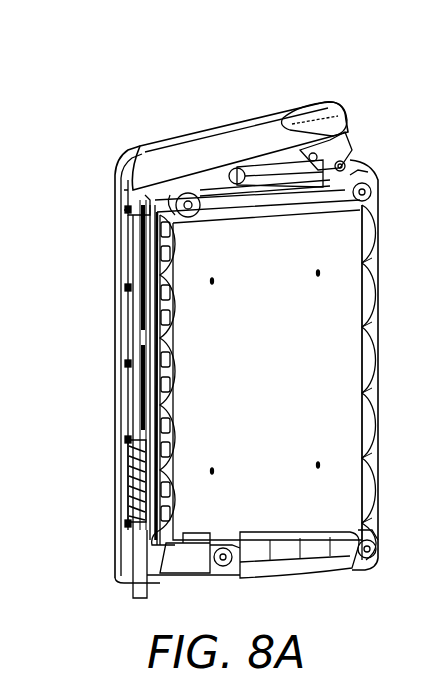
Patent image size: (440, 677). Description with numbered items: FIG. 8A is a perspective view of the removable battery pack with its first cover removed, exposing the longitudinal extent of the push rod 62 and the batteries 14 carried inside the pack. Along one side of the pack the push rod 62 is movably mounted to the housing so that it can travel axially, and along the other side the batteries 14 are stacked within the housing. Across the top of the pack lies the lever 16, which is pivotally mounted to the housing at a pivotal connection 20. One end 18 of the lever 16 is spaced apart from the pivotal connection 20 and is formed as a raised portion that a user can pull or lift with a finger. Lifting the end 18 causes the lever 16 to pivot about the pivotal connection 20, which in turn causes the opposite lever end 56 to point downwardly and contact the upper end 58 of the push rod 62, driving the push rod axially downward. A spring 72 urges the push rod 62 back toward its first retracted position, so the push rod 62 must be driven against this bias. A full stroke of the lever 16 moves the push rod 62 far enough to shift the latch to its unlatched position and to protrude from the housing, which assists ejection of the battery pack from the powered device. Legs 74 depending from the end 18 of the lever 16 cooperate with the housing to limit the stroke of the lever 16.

The batteries 14 is at (378, 346).
The lever 16 is at (241, 127).
The end of the lever 18 is at (322, 100).
The pivotal connection 20 is at (228, 143).
The lever end 56 is at (130, 162).
The upper end of the push rod 58 is at (145, 226).
The push rod 62 is at (132, 388).
The spring 72 is at (130, 495).
The legs 74 is at (346, 136).